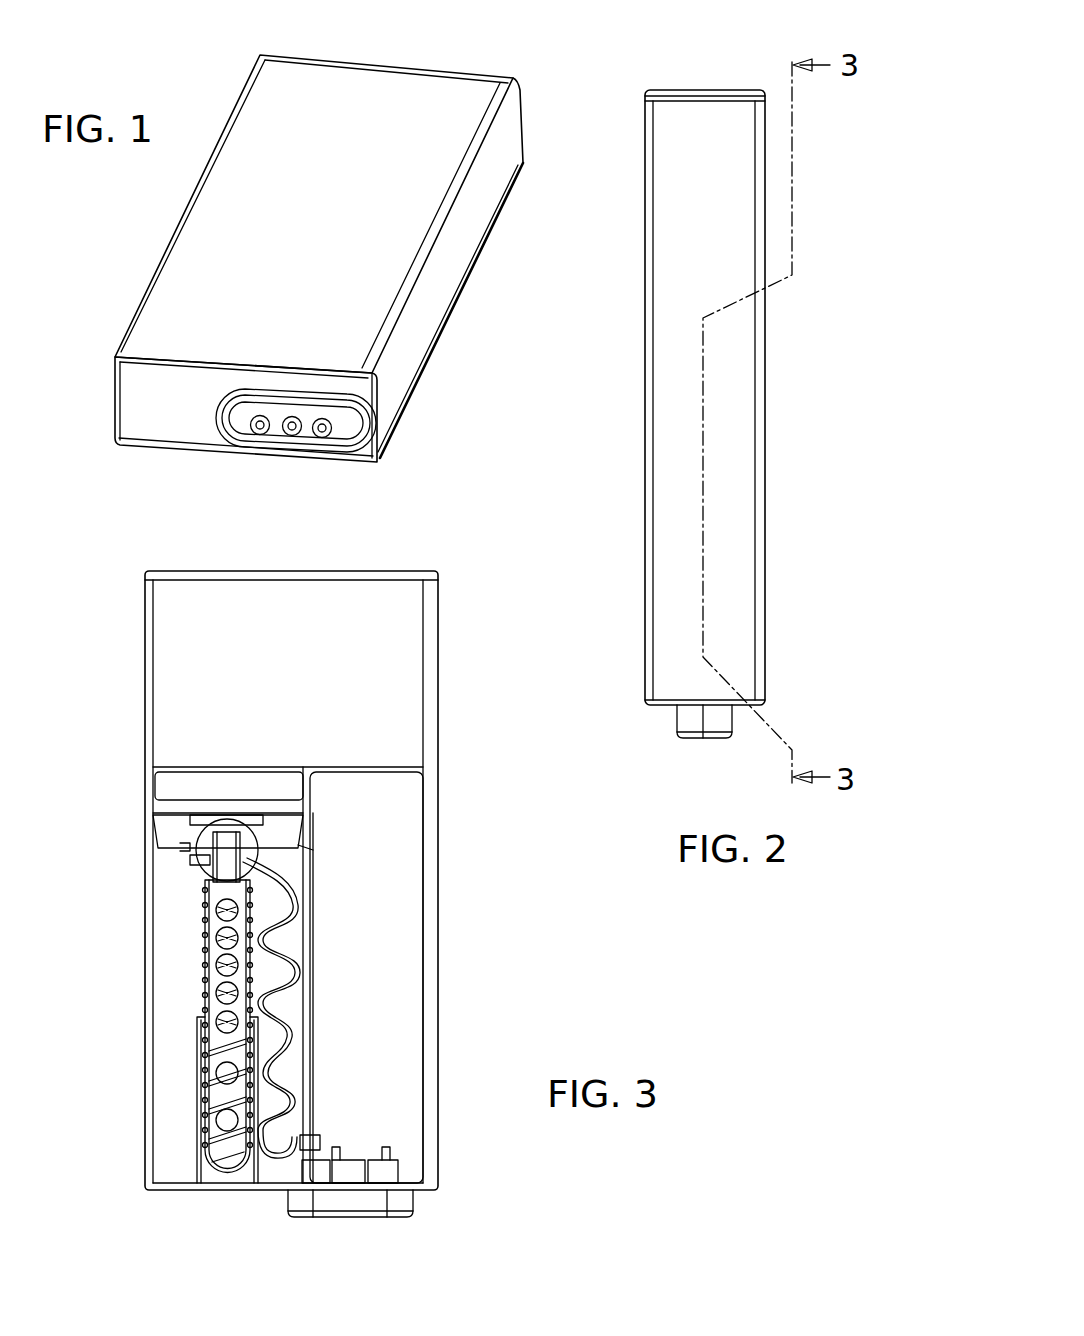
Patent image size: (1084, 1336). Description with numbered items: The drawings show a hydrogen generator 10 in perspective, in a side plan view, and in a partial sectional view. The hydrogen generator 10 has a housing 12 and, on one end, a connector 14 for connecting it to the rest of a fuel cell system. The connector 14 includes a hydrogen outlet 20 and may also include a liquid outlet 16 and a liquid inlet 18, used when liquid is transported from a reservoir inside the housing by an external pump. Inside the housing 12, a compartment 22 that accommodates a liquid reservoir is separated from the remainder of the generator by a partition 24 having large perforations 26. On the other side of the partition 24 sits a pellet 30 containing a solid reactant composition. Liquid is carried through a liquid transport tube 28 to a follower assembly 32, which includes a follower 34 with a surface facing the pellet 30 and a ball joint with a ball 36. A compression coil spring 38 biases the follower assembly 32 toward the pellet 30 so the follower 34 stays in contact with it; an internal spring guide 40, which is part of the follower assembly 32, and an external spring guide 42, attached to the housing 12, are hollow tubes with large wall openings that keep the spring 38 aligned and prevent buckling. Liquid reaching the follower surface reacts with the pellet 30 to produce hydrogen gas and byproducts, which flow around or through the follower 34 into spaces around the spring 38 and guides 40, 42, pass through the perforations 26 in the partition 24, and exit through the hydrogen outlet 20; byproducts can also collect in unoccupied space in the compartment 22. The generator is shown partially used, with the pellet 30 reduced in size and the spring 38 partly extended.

In FIG. 1, the hydrogen generator 10 is at (153, 218).
In FIG. 1, the housing 12 is at (433, 312).
In FIG. 2, the housing 12 is at (670, 570).
In FIG. 3, the housing 12 is at (168, 648).
In FIG. 1, the connector 14 is at (345, 443).
In FIG. 2, the connector 14 is at (683, 725).
In FIG. 3, the connector 14 is at (410, 1203).
In FIG. 1, the liquid outlet 16 is at (318, 438).
In FIG. 1, the liquid inlet 18 is at (252, 435).
In FIG. 1, the hydrogen outlet 20 is at (283, 436).
In FIG. 3, the compartment 22 is at (390, 997).
In FIG. 3, the partition 24 is at (315, 850).
In FIG. 3, the perforations 26 is at (310, 997).
In FIG. 3, the liquid transport tube 28 is at (308, 1073).
In FIG. 3, the pellet 30 is at (162, 789).
In FIG. 3, the follower assembly 32 is at (175, 861).
In FIG. 3, the follower 34 is at (166, 835).
In FIG. 3, the ball 36 is at (197, 872).
In FIG. 3, the spring 38 is at (197, 958).
In FIG. 3, the internal spring guide 40 is at (197, 1013).
In FIG. 3, the external spring guide 42 is at (197, 1083).